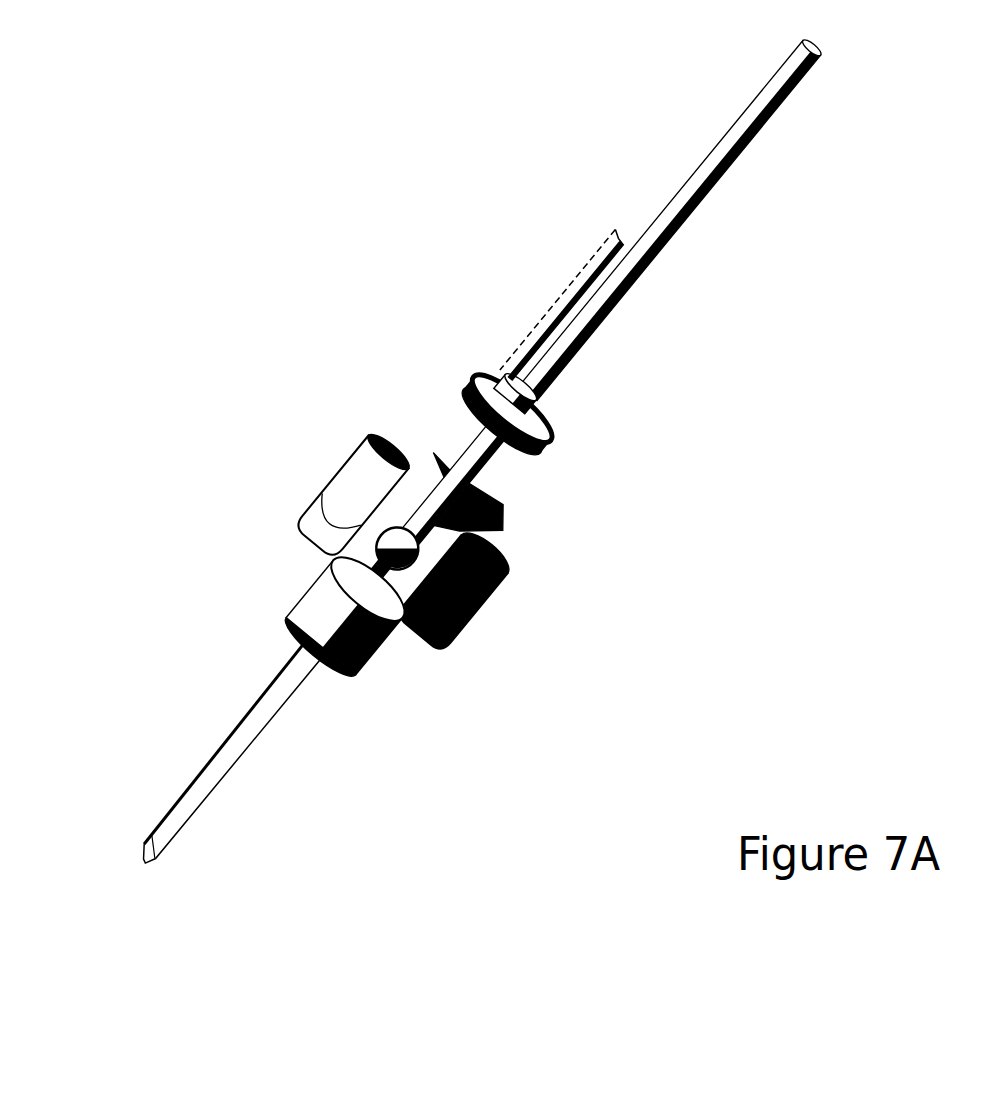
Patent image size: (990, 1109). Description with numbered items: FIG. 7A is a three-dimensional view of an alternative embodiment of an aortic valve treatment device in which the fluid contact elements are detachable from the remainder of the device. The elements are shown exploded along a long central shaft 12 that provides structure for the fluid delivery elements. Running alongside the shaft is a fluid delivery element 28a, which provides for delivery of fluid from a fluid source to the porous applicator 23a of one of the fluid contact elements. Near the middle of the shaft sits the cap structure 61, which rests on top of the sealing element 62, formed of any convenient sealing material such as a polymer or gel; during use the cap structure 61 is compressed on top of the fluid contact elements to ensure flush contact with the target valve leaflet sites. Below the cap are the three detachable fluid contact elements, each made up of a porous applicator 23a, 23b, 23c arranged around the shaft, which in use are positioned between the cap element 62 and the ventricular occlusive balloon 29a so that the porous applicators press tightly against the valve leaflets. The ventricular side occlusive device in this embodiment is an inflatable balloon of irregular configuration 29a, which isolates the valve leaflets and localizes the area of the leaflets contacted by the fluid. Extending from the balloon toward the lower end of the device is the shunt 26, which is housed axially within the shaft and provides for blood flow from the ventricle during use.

The shaft 12 is at (698, 207).
The fluid delivery element 28a is at (557, 317).
The cap structure 61 is at (542, 413).
The sealing element 62 is at (555, 447).
The porous applicator 23a is at (333, 498).
The porous applicator 23b is at (493, 585).
The porous applicator 23c is at (477, 497).
The inflatable balloon of irregular configuration 29a is at (377, 660).
The shunt 26 is at (237, 750).